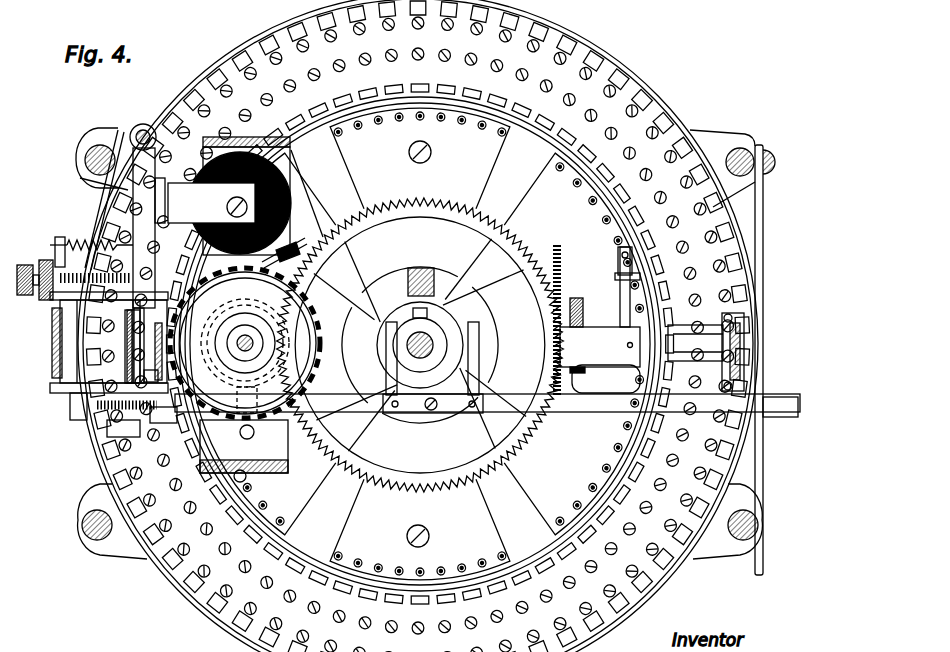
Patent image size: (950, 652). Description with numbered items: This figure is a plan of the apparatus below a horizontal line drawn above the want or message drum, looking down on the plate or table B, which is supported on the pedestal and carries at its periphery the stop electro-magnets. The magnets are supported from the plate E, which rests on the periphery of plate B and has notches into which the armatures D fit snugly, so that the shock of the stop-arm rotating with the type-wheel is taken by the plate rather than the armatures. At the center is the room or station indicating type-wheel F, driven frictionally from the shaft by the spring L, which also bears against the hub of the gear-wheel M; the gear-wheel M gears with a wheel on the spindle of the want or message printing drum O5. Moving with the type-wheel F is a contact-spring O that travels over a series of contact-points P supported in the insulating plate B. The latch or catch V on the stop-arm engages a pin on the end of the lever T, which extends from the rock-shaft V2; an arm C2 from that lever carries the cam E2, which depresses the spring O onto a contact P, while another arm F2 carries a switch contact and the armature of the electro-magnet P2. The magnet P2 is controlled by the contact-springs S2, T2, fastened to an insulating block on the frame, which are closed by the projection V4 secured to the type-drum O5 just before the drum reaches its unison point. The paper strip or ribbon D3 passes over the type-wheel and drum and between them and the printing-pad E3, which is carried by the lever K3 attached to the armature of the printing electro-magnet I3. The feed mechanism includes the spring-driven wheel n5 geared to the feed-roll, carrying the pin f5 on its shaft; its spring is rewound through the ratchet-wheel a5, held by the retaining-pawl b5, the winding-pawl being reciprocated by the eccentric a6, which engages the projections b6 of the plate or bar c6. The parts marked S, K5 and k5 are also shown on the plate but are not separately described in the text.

The plate E is at (640, 93).
The armatures D is at (660, 100).
The plate B is at (425, 344).
The type-wheel F is at (511, 160).
The screw S is at (607, 226).
The contact-points P is at (617, 238).
The gear-wheel M is at (429, 209).
The spring L is at (418, 289).
The eccentric a6 is at (443, 317).
The projections b6 is at (387, 336).
The plate or bar c6 is at (560, 411).
The operating stud or projection V4 is at (245, 375).
The want or message printing drum O5 is at (308, 313).
The electro-magnet I3 is at (245, 196).
The lever K3 is at (107, 253).
The contact-spring S2 is at (297, 233).
The contact-spring T2 is at (307, 245).
The printing-pad E3 is at (125, 328).
The strip or ribbon of paper D3 is at (130, 255).
The slide K5 is at (135, 346).
The lug k5 is at (150, 382).
The wheel n5 is at (83, 402).
The retaining-pawl b5 is at (80, 417).
The pin or projection f5 is at (107, 430).
The ratchet-wheel a5 is at (153, 410).
The rock-shaft V2 is at (628, 345).
The arm F2 is at (605, 379).
The electro-magnet P2 is at (573, 300).
The arm C2 is at (630, 310).
The cam E2 is at (626, 285).
The contact-spring O is at (623, 262).
The lever T is at (695, 343).
The latch or catch V is at (730, 385).